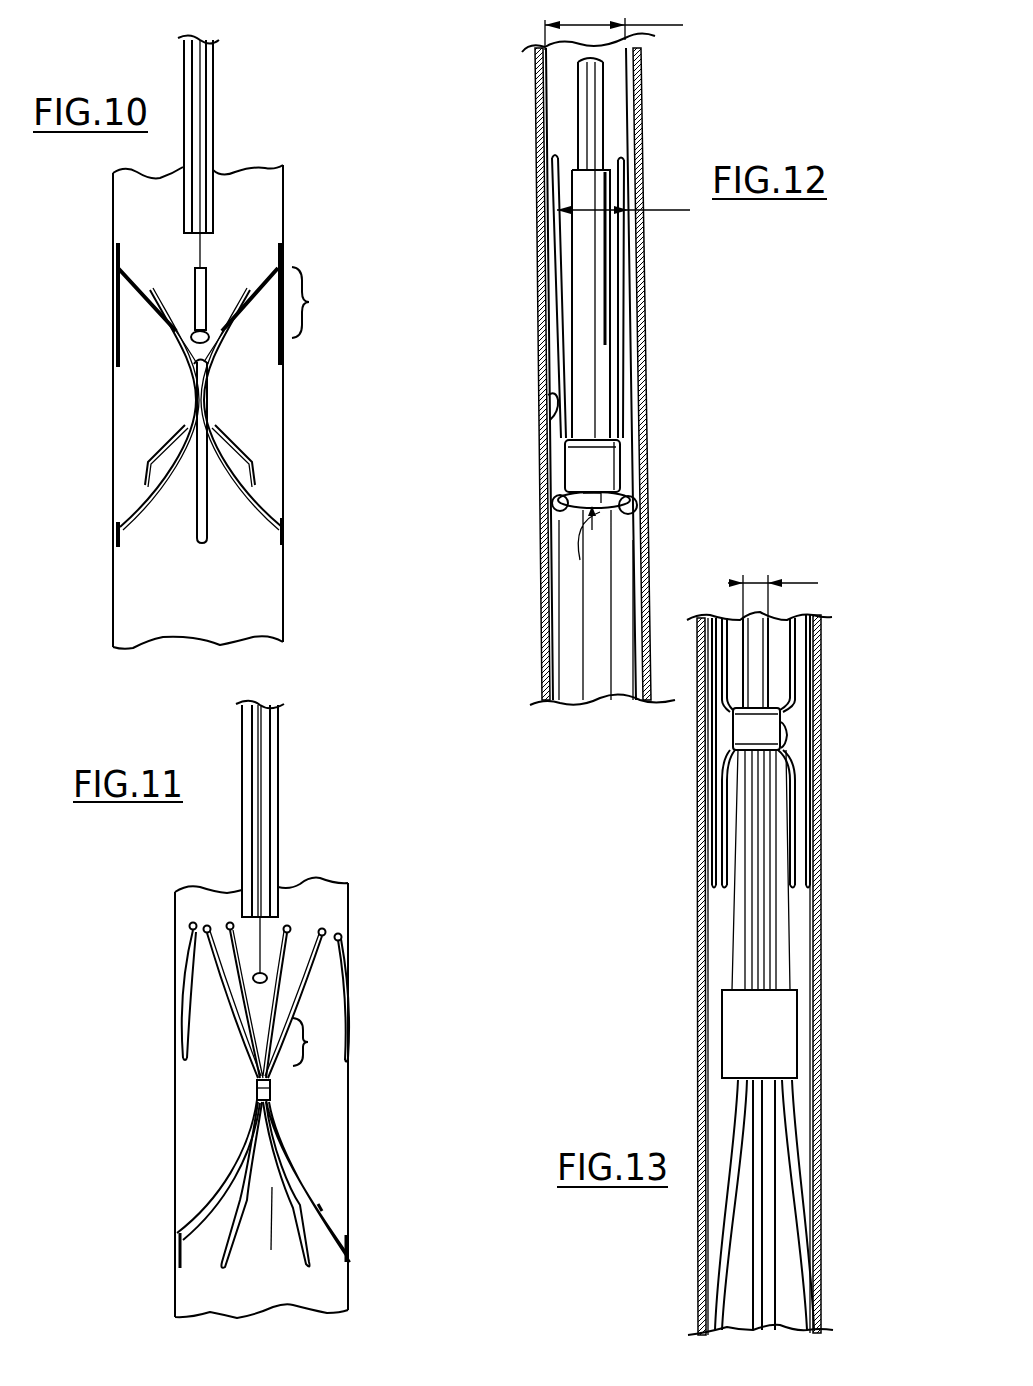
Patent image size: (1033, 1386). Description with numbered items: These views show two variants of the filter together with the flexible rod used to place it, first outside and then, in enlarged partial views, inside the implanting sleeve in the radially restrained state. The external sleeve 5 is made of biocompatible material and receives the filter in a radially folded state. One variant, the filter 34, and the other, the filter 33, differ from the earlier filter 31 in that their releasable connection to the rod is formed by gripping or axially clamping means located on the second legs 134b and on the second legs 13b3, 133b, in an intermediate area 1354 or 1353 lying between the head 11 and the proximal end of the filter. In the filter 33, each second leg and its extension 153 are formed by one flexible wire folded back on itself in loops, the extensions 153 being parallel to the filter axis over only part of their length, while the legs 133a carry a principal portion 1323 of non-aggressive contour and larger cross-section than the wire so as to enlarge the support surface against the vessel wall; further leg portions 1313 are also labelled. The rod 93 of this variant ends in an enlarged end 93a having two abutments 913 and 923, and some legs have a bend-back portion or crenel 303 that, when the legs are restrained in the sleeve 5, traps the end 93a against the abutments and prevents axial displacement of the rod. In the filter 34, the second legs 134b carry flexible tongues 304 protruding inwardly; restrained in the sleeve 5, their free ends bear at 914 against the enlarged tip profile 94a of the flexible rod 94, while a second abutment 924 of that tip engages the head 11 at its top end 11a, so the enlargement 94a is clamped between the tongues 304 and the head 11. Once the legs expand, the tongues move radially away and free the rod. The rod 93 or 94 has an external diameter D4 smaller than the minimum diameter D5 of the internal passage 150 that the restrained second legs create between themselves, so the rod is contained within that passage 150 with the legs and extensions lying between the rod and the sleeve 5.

In FIG. 10, the external sleeve 5 is at (213, 184).
In FIG. 11, the external sleeve 5 is at (273, 815).
In FIG. 12, the external sleeve 5 is at (642, 44).
In FIG. 13, the external sleeve 5 is at (697, 952).
In FIG. 10, the flexible rod 94 is at (200, 88).
In FIG. 12, the flexible rod 94 is at (587, 112).
In FIG. 11, the flexible rod 93 is at (257, 927).
In FIG. 13, the flexible rod 93 is at (758, 648).
In FIG. 11, the enlarged end of rod 93a is at (287, 925).
In FIG. 13, the enlarged end of rod 93a is at (747, 720).
In FIG. 12, the enlarged tip profile 94a is at (600, 463).
In FIG. 11, the head 11 is at (257, 1093).
In FIG. 12, the head 11 is at (593, 515).
In FIG. 13, the head 11 is at (775, 1038).
In FIG. 12, the top end of head 11a is at (573, 507).
In FIG. 10, the filter 31 is at (113, 473).
In FIG. 11, the filter 31 is at (165, 1179).
In FIG. 11, the filter 33 is at (318, 1116).
In FIG. 10, the filter 34 is at (250, 387).
In FIG. 10, the flexible tongue 304 is at (157, 307).
In FIG. 12, the flexible tongue 304 is at (618, 330).
In FIG. 11, the crenel 303 is at (240, 1035).
In FIG. 13, the crenel 303 is at (788, 727).
In FIG. 10, the second leg 134b is at (235, 338).
In FIG. 12, the second leg 134b is at (560, 407).
In FIG. 13, the second leg 134b is at (733, 930).
In FIG. 10, the intermediate area 1354 is at (305, 297).
In FIG. 11, the extension 153 is at (180, 1003).
In FIG. 11, the leg 133b is at (340, 1022).
In FIG. 11, the second leg 13b3 is at (193, 1043).
In FIG. 11, the intermediate area 1353 is at (305, 1043).
In FIG. 11, the leg 1313 is at (227, 1177).
In FIG. 11, the leg 133a is at (207, 1200).
In FIG. 11, the principal portion 1323 is at (347, 1247).
In FIG. 13, the abutment 913 is at (780, 712).
In FIG. 12, the support point 914 is at (595, 440).
In FIG. 13, the abutment 923 is at (763, 757).
In FIG. 12, the second abutment 924 is at (610, 520).
In FIG. 12, the internal passage 150 is at (615, 137).
In FIG. 13, the internal passage 150 is at (738, 907).
In FIG. 12, the external diameter of rod D4 is at (623, 195).
In FIG. 13, the external diameter of rod D4 is at (773, 583).
In FIG. 12, the minimum diameter of passage D5 is at (614, 25).